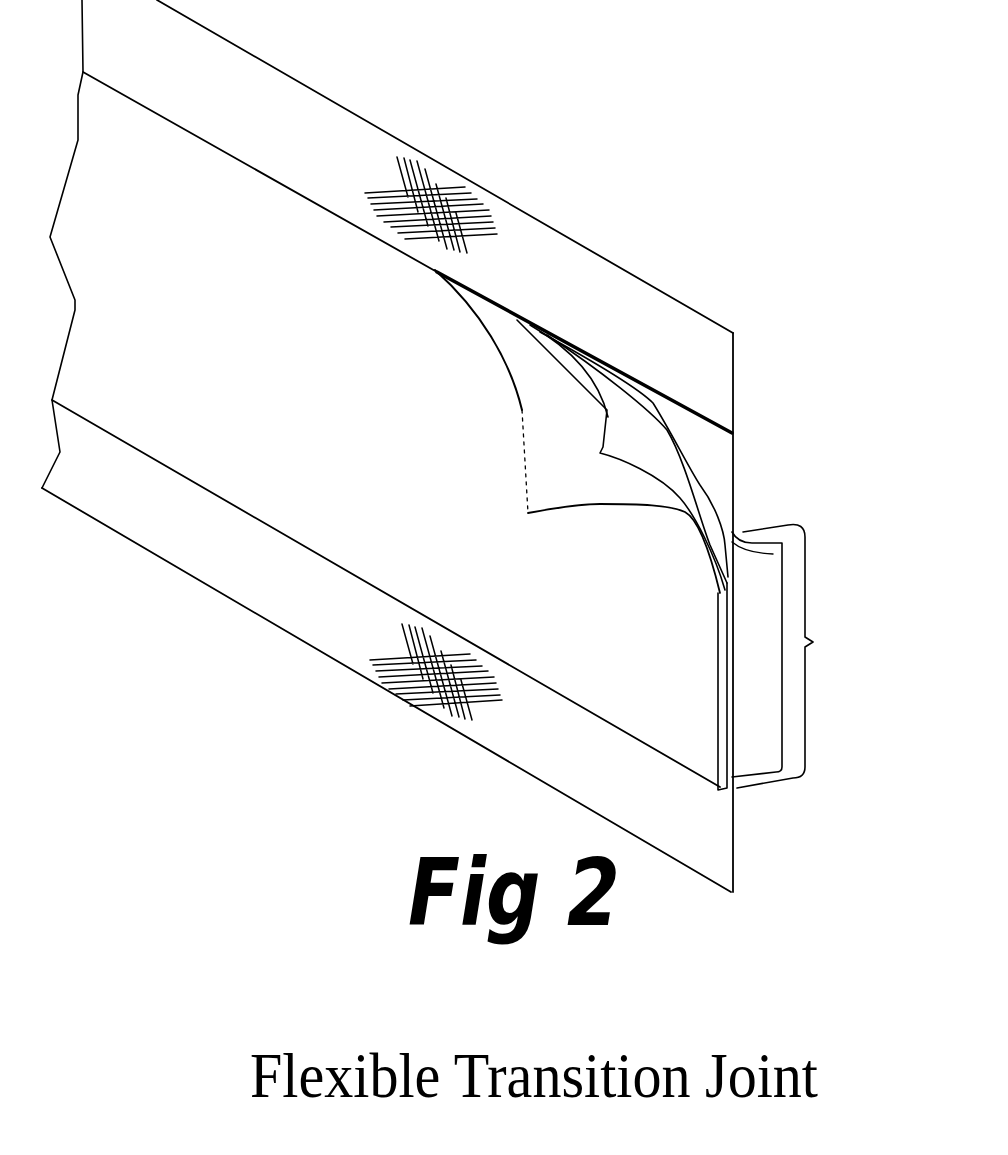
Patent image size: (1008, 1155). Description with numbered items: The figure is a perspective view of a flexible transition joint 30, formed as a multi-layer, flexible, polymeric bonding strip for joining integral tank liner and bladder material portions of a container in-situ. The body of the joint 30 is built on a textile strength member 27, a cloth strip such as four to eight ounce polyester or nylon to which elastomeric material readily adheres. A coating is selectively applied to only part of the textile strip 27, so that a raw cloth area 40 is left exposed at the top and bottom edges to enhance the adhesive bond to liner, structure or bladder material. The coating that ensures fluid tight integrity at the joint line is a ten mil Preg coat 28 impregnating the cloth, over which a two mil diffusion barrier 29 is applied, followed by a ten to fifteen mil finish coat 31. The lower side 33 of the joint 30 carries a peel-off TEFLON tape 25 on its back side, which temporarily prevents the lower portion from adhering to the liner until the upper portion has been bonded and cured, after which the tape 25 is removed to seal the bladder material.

The peel-off TEFLON tape 25 is at (752, 738).
The textile strength member 27 is at (590, 295).
The Preg coat 28 is at (708, 438).
The diffusion barrier 29 is at (642, 448).
The flexible transition joint 30 is at (376, 404).
The finish coat 31 is at (558, 480).
The lower side 33 is at (799, 657).
The raw cloth area 40 is at (364, 186).